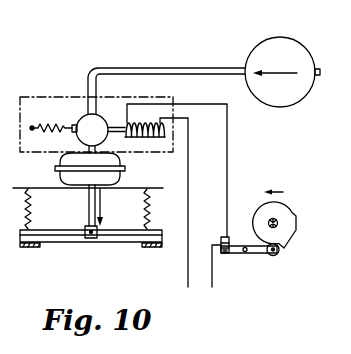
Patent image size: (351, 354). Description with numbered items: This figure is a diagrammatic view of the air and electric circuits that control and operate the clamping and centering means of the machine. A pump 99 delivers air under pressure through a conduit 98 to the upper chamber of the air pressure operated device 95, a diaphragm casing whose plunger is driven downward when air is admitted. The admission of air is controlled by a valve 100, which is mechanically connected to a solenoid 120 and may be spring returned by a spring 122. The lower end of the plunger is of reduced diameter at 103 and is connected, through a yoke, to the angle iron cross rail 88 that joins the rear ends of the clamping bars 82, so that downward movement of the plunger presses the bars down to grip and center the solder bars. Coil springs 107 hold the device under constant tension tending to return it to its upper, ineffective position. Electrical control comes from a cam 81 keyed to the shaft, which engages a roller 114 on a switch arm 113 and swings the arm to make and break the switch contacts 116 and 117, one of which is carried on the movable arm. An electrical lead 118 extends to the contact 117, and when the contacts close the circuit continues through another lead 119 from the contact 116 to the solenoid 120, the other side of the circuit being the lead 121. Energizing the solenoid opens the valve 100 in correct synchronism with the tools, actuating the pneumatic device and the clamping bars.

The cam 81 is at (287, 212).
The bars 82 is at (27, 249).
The angle iron cross rail 88 is at (65, 236).
The air pressure operated device 95 is at (56, 161).
The conduit 98 is at (203, 67).
The pump 99 is at (300, 57).
The valve 100 is at (104, 116).
The reduced diameter lower end of the plunger 103 is at (88, 204).
The coil springs 107 is at (145, 207).
The switch arm 113 is at (258, 254).
The roller 114 is at (280, 252).
The contact 116 is at (229, 236).
The contact 117 is at (227, 255).
The electrical lead 118 is at (212, 286).
The lead 119 is at (228, 134).
The solenoid 120 is at (143, 137).
The lead 121 is at (188, 160).
The spring 122 is at (50, 126).